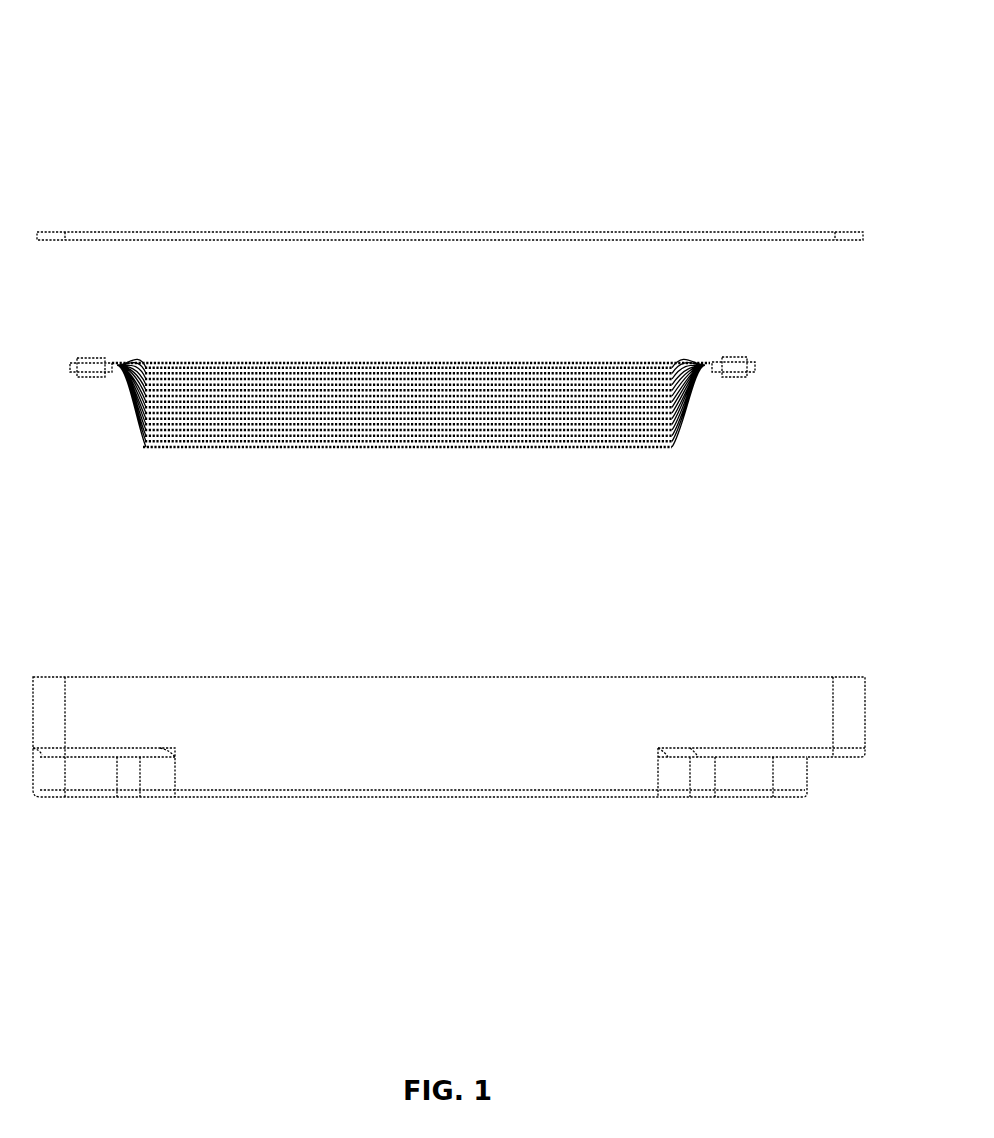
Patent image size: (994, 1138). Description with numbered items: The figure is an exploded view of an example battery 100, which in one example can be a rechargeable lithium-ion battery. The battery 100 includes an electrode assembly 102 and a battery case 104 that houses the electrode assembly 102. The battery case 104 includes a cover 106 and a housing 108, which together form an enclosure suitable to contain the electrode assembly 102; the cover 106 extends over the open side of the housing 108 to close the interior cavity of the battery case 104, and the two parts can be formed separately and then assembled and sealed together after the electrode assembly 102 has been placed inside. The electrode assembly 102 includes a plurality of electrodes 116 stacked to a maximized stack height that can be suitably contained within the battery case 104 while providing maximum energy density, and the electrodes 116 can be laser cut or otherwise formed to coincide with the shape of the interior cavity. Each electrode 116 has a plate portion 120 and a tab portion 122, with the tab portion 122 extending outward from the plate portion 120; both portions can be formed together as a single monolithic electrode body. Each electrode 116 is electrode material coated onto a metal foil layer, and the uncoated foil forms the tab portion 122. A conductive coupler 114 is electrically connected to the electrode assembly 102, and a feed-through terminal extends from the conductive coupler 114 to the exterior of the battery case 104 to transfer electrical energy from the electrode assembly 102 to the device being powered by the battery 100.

The battery 100 is at (148, 62).
The electrode assembly 102 is at (722, 333).
The battery case 104 is at (768, 163).
The cover 106 is at (585, 232).
The housing 108 is at (617, 675).
The conductive coupler 114 is at (70, 370).
The electrodes 116 is at (515, 361).
The plate portion 120 is at (378, 452).
The tab portion 122 is at (135, 418).